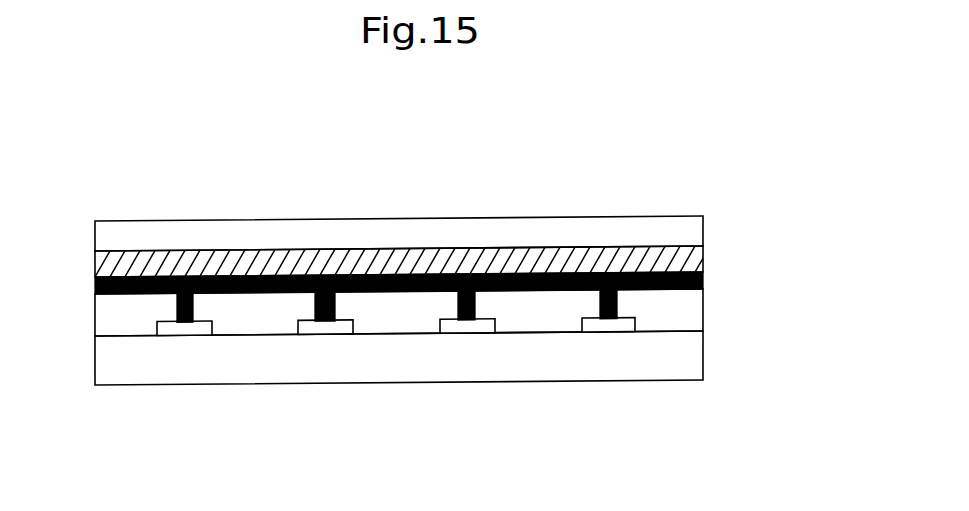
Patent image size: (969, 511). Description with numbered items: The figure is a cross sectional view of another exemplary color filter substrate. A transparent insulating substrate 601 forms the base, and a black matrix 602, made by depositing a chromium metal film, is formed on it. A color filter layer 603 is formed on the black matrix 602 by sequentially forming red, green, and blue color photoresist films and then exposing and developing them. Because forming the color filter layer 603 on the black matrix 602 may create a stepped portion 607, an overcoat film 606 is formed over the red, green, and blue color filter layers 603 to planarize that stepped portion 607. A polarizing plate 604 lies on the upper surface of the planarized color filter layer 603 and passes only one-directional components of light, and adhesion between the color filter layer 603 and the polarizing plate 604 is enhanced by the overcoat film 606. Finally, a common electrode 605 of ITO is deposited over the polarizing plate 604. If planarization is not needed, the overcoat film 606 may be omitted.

The transparent insulating substrate 601 is at (703, 355).
The black matrix 602 is at (607, 328).
The color filter layer 603 is at (693, 303).
The polarizing plate 604 is at (687, 257).
The common electrode 605 is at (668, 228).
The overcoat film 606 is at (703, 282).
The stepped portion 607 is at (176, 308).